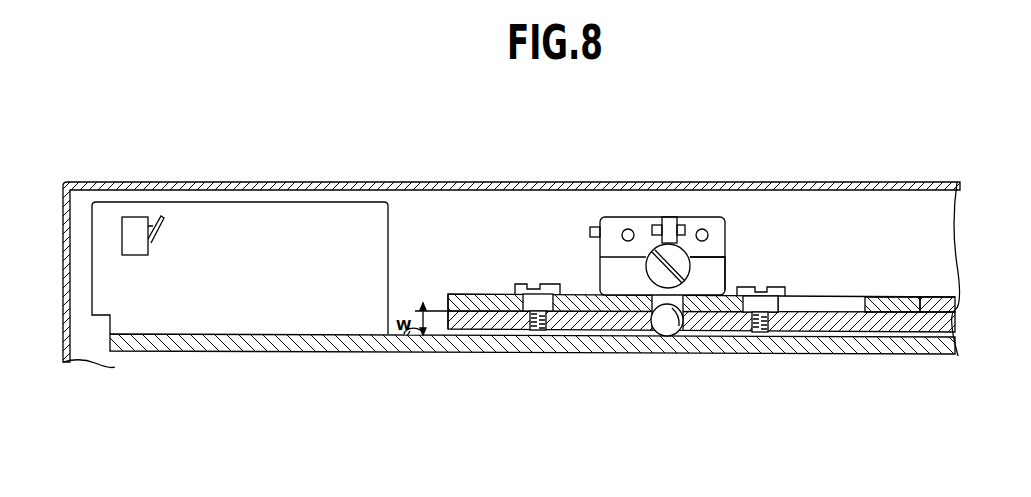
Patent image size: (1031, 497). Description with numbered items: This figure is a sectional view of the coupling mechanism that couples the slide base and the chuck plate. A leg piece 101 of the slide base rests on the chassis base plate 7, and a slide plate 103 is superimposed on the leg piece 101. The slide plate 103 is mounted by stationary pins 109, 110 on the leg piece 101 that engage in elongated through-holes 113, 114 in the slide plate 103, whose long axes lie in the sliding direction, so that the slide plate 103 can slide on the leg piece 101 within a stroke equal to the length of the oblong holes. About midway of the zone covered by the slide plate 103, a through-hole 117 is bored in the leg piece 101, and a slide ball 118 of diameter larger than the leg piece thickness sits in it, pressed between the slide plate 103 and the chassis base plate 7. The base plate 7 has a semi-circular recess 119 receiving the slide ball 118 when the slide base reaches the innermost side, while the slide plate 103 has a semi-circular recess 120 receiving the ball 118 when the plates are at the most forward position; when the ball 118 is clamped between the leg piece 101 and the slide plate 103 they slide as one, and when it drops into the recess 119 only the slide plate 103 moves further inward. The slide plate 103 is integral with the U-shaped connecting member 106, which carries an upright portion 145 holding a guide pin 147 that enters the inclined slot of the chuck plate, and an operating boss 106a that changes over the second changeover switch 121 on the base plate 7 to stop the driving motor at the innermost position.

The chassis base plate 7 is at (331, 352).
The leg piece 101 is at (878, 323).
The slide plate 103 is at (912, 298).
The connecting member 106 is at (703, 226).
The operating boss 106a is at (656, 228).
The stationary pin 109 is at (522, 290).
The stationary pin 110 is at (787, 290).
The elongated through-hole 113 is at (586, 294).
The elongated through-hole 114 is at (862, 306).
The through-hole 117 is at (667, 334).
The slide ball 118 is at (676, 331).
The semi-circular recess 119 is at (414, 341).
The semi-circular recess 120 is at (678, 307).
The second changeover switch 121 is at (133, 232).
The upright portion 145 is at (715, 243).
The guide pin 147 is at (658, 258).